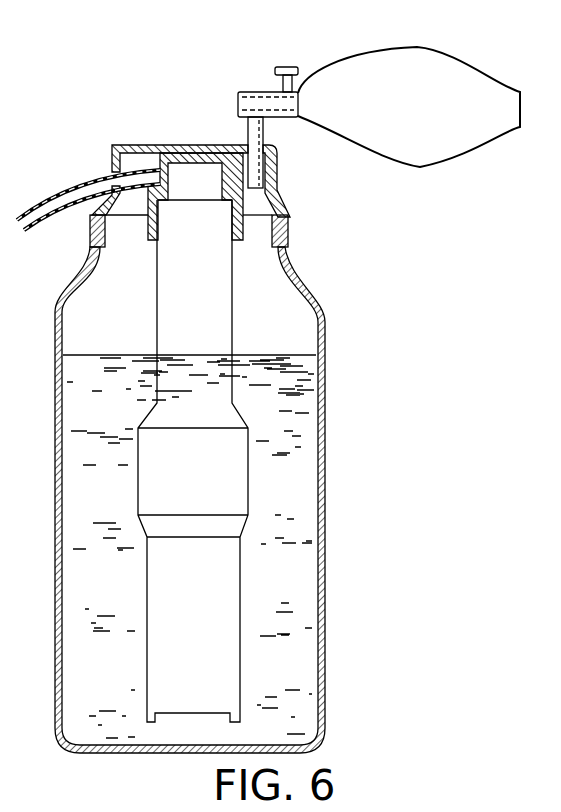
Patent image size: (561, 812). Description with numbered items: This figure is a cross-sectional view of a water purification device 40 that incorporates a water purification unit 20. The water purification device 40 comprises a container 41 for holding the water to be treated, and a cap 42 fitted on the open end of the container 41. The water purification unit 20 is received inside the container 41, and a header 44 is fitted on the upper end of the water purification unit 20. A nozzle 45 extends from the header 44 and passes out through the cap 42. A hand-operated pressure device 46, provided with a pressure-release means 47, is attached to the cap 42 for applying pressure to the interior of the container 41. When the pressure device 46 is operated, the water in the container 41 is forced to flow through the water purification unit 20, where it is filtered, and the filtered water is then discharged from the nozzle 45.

The water purification unit 20 is at (248, 518).
The water purification device 40 is at (229, 484).
The container 41 is at (327, 448).
The cap 42 is at (140, 145).
The header 44 is at (233, 170).
The nozzle 45 is at (37, 200).
The hand-operated pressure device 46 is at (452, 68).
The pressure-release means 47 is at (287, 66).